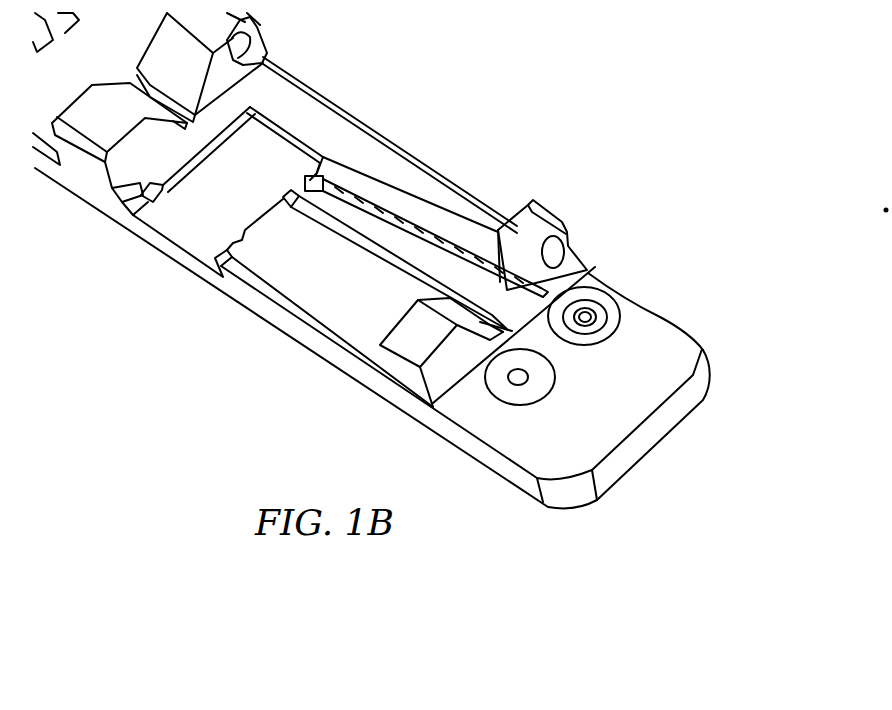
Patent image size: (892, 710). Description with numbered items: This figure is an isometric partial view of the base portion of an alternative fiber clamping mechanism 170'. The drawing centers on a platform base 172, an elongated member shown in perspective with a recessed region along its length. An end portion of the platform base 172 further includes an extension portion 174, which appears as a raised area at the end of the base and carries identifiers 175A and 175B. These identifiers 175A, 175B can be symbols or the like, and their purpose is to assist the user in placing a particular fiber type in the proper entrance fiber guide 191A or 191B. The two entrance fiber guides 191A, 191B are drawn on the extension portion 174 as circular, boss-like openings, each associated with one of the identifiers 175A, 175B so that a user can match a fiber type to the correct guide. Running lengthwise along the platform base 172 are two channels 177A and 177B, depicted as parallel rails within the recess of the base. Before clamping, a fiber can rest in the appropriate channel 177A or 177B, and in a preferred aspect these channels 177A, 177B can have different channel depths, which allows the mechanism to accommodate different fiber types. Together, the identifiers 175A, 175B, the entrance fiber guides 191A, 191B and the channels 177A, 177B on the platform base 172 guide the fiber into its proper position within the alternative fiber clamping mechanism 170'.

The fiber clamping mechanism 170' is at (295, 389).
The platform base 172 is at (263, 305).
The extension portion 174 is at (520, 430).
The identifier 175A is at (518, 393).
The identifier 175B is at (605, 333).
The channel 177A is at (403, 263).
The channel 177B is at (345, 195).
The entrance fiber guide 191A is at (552, 352).
The entrance fiber guide 191B is at (587, 272).